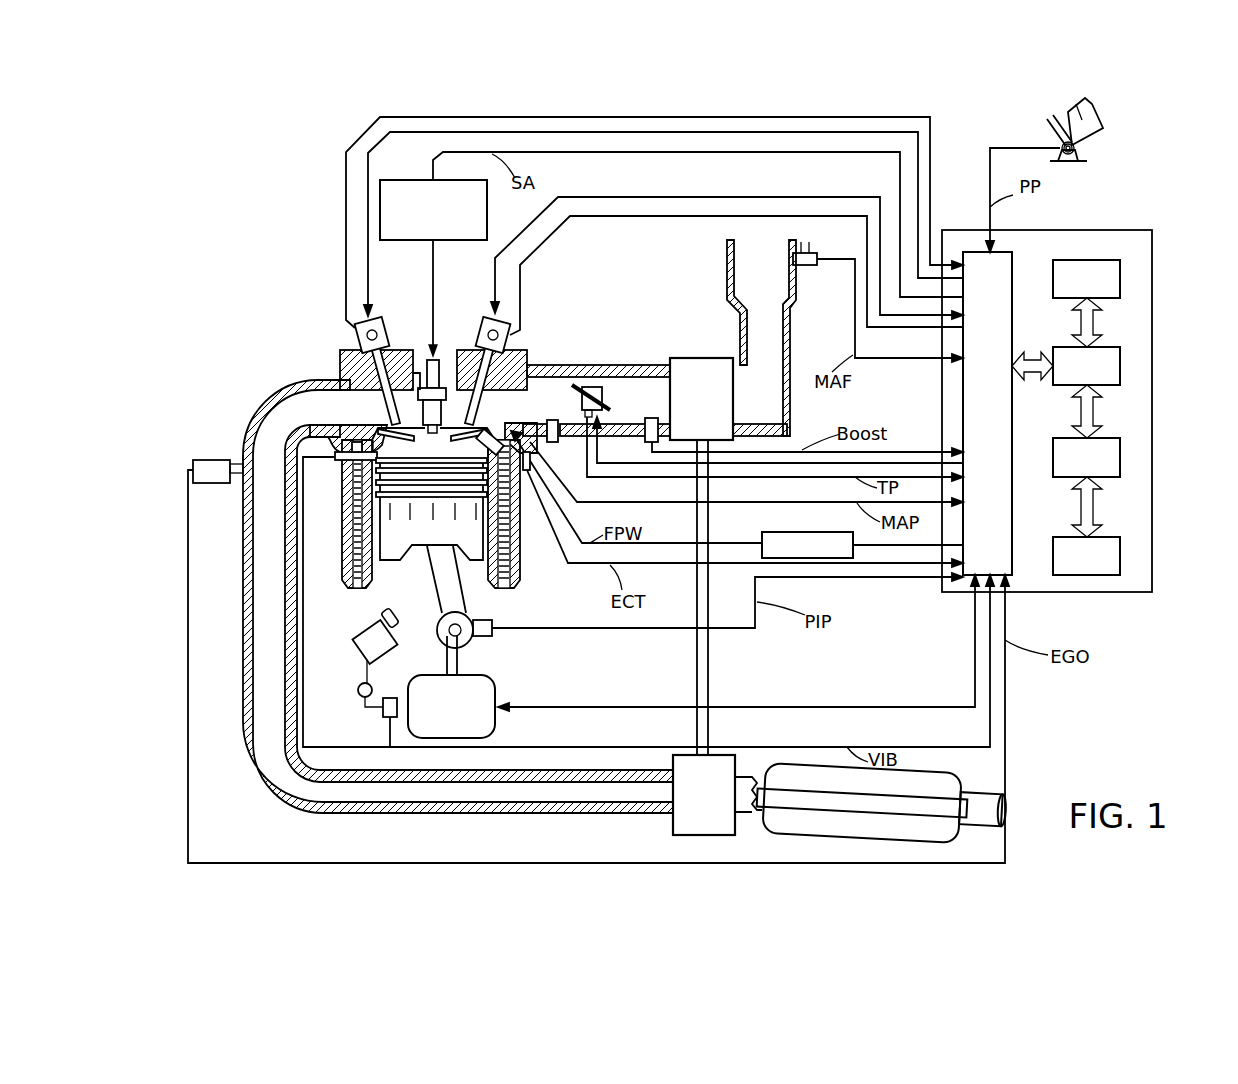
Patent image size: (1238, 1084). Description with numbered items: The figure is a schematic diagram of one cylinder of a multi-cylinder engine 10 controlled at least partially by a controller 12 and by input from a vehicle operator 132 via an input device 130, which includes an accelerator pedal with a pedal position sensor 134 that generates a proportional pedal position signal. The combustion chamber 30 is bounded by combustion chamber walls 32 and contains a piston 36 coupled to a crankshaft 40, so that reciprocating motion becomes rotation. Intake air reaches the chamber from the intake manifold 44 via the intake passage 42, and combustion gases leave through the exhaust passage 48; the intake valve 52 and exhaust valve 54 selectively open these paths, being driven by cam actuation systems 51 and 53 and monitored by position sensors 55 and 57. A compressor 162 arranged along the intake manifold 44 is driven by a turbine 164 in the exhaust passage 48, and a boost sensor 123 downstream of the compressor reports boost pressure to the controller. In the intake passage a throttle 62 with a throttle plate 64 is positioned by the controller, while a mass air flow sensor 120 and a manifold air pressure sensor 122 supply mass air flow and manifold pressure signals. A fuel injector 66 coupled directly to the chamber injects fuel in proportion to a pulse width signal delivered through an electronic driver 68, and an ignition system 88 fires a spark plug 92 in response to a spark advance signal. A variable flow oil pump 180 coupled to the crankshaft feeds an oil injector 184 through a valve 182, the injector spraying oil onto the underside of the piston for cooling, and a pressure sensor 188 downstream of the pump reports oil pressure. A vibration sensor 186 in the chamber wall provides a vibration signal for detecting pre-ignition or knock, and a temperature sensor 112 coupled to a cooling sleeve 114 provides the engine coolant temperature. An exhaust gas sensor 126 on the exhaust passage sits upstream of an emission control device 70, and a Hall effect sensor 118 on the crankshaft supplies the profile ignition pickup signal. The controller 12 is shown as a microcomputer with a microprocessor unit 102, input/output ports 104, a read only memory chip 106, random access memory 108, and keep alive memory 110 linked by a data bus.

The engine 10 is at (280, 306).
The controller 12 is at (1140, 232).
The combustion chamber 30 is at (401, 451).
The combustion chamber walls 32 is at (378, 568).
The piston 36 is at (470, 562).
The crankshaft 40 is at (472, 648).
The intake passage 42 is at (752, 281).
The intake manifold 44 is at (626, 408).
The exhaust passage 48 is at (298, 415).
The cam actuation system 51 is at (482, 320).
The intake valve 52 is at (447, 380).
The cam actuation system 53 is at (380, 323).
The exhaust valve 54 is at (340, 388).
The position sensor 55 is at (510, 338).
The position sensor 57 is at (360, 340).
The throttle 62 is at (592, 387).
The throttle plate 64 is at (572, 383).
The fuel injector 66 is at (490, 437).
The electronic driver 68 is at (780, 532).
The emission control device 70 is at (923, 775).
The ignition system 88 is at (392, 180).
The spark plug 92 is at (427, 383).
The microprocessor unit 102 is at (1122, 365).
The input/output ports 104 is at (1013, 262).
The read only memory chip 106 is at (1122, 280).
The random access memory 108 is at (1122, 458).
The keep alive memory 110 is at (1122, 553).
The temperature sensor 112 is at (553, 535).
The cooling sleeve 114 is at (530, 475).
The Hall effect sensor 118 is at (493, 633).
The mass air flow sensor 120 is at (818, 255).
The manifold air pressure sensor 122 is at (557, 445).
The boost sensor 123 is at (646, 438).
The exhaust gas sensor 126 is at (193, 464).
The input device 130 is at (1050, 123).
The vehicle operator 132 is at (1097, 120).
The pedal position sensor 134 is at (1082, 152).
The compressor 162 is at (690, 357).
The turbine 164 is at (673, 823).
The variable flow oil pump 180 is at (497, 722).
The valve 182 is at (358, 690).
The oil injector 184 is at (392, 645).
The vibration sensor 186 is at (335, 462).
The pressure sensor 188 is at (383, 712).